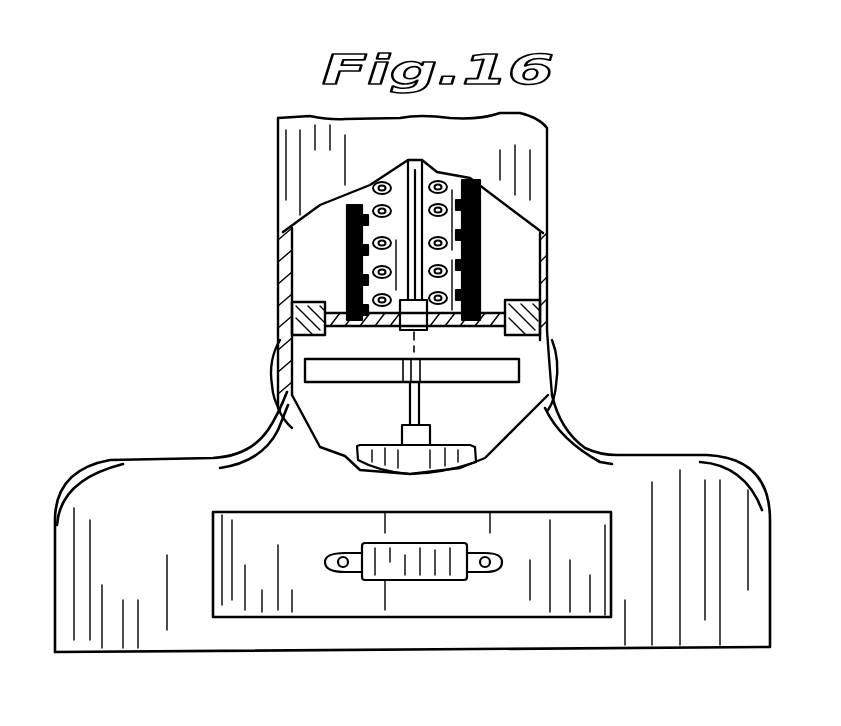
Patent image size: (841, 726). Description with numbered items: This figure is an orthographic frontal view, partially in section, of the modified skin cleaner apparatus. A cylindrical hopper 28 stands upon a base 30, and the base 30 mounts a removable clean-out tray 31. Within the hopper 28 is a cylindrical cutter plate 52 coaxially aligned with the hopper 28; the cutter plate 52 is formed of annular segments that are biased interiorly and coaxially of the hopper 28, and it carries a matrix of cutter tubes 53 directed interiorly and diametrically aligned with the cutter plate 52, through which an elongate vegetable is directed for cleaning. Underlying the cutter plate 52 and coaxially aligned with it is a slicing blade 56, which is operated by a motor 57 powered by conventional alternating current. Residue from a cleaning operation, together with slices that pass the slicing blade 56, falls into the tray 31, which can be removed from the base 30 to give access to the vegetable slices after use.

The cylindrical hopper 28 is at (549, 163).
The base 30 is at (643, 480).
The clean-out tray 31 is at (570, 537).
The cylindrical cutter plate 52 is at (483, 244).
The cutter tubes 53 is at (480, 210).
The slicing blade 56 is at (505, 372).
The motor 57 is at (480, 417).